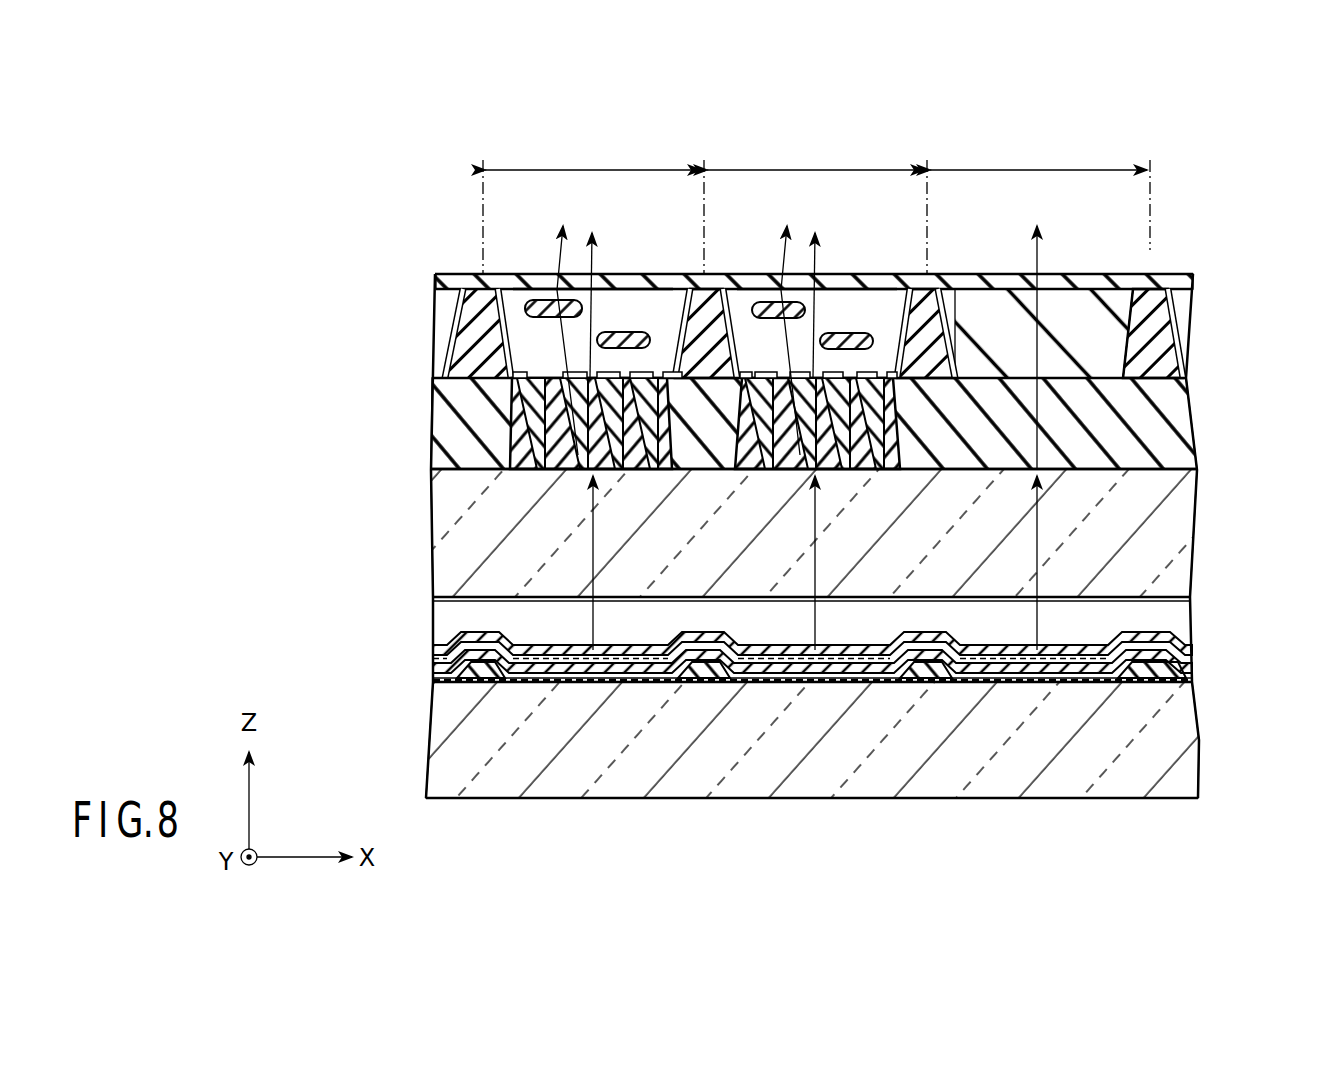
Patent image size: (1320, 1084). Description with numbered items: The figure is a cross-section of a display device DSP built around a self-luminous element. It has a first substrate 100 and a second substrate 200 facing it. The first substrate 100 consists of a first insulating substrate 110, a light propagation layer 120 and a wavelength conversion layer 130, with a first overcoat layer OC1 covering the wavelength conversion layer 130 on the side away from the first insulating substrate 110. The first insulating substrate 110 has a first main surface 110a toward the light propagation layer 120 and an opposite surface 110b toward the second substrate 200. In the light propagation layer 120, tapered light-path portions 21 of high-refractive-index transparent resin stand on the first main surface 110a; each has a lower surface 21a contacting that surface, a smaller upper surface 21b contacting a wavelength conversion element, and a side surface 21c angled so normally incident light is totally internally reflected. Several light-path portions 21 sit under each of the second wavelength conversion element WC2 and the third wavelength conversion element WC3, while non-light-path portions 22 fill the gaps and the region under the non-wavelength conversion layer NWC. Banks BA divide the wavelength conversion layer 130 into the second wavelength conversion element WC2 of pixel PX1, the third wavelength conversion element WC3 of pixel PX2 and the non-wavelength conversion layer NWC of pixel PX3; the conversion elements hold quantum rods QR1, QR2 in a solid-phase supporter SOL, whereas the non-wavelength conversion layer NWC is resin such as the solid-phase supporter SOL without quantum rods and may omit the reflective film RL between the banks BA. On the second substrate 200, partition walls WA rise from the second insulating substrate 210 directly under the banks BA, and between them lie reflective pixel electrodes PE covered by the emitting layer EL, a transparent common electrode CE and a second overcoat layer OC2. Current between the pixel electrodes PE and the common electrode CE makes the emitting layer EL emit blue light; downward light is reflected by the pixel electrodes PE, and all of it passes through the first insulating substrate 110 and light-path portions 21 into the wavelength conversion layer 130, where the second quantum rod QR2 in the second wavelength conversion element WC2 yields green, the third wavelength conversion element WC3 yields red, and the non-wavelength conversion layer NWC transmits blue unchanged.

The display device DSP is at (1222, 184).
The first substrate 100 is at (760, 648).
The first insulating substrate 110 is at (828, 530).
The first main surface 110a is at (1180, 466).
The second main surface of substrate 110b is at (1162, 602).
The light propagation layer 120 is at (801, 348).
The wavelength conversion layer 130 is at (737, 288).
The second substrate 200 is at (707, 727).
The second insulating substrate 210 is at (437, 732).
The light-path portion 21 is at (777, 420).
The lower surface 21a is at (525, 469).
The upper surface 21b is at (572, 374).
The side surface 21c is at (575, 425).
The non-light-path portion 22 is at (1169, 400).
The first overcoat layer OC1 is at (435, 283).
The second overcoat layer OC2 is at (450, 633).
The common electrode CE is at (447, 652).
The emitting layer EL is at (440, 679).
The pixel electrode PE is at (640, 676).
The partition wall WA is at (492, 688).
The bank BA is at (477, 274).
The reflective layer RL is at (500, 335).
The second wavelength conversion element WC2 is at (518, 300).
The third wavelength conversion element WC3 is at (740, 300).
The non-wavelength conversion layer NWC is at (988, 300).
The solid-phase supporter SOL is at (660, 300).
The first quantum rods QR1 is at (628, 332).
The second quantum rod QR2 is at (850, 333).
The pixel PX1 is at (593, 206).
The pixel PX2 is at (817, 206).
The pixel PX3 is at (1040, 194).